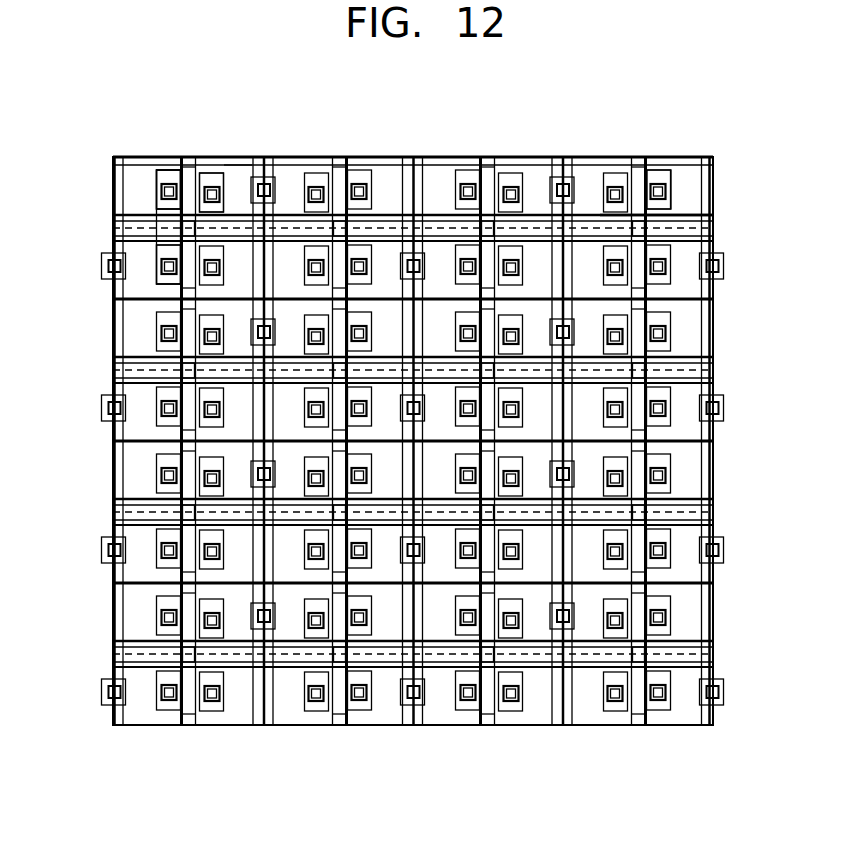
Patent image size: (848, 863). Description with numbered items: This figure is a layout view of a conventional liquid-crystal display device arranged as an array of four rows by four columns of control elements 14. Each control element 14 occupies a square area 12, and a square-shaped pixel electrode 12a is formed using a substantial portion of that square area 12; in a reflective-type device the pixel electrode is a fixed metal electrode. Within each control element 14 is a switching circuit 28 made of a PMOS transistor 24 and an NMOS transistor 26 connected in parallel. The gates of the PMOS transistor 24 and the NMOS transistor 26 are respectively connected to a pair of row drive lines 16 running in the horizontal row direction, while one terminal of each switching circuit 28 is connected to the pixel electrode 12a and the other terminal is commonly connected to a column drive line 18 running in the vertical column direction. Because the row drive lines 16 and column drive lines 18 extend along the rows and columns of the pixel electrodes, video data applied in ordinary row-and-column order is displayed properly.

The square area 12 is at (205, 170).
The pixel electrode 12a is at (232, 168).
The control element 14 is at (112, 175).
The row drive line 16 is at (690, 207).
The column drive line 18 is at (165, 167).
The PMOS transistor 24 is at (146, 273).
The NMOS transistor 26 is at (146, 200).
The switching circuit 28 is at (58, 197).